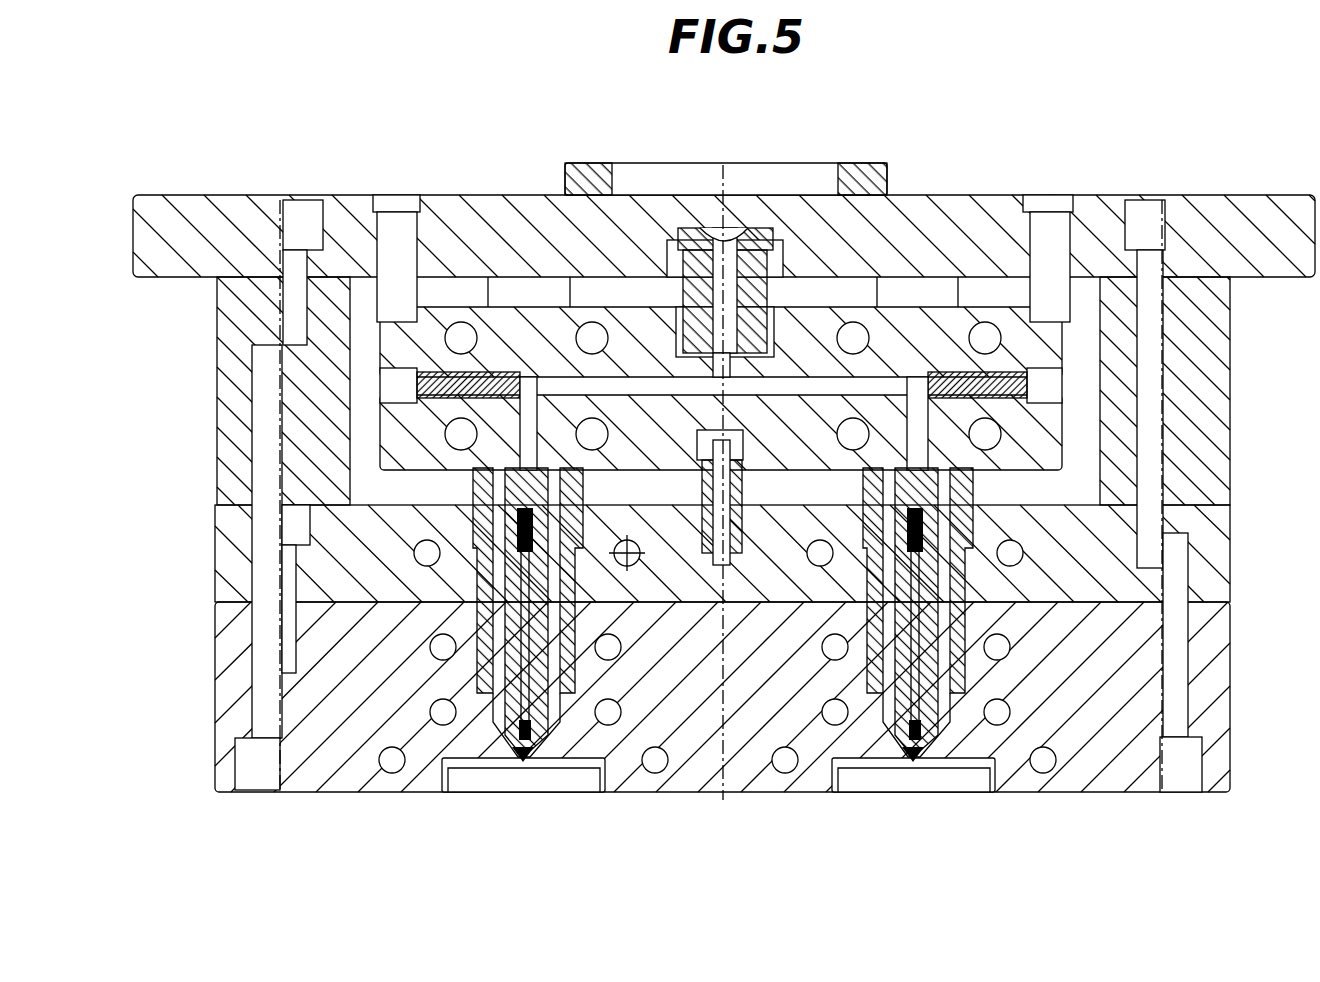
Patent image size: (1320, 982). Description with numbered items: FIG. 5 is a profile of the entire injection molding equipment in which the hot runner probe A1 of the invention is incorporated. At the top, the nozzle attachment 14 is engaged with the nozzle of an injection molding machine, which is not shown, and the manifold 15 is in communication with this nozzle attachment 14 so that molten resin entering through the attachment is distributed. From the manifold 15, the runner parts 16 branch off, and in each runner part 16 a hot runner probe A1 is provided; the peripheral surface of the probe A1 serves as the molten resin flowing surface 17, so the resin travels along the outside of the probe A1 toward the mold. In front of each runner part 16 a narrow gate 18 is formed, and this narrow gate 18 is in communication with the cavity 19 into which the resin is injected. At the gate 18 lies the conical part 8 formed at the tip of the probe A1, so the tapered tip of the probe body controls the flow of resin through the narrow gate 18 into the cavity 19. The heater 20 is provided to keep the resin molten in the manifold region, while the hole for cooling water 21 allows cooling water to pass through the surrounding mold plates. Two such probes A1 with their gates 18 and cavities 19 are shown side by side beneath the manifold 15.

The nozzle attachment 14 is at (717, 237).
The manifold 15 is at (898, 335).
The heater 20 is at (985, 333).
The runner part 16 is at (500, 613).
The hole for cooling water 21 is at (1000, 712).
The molten resin flowing surface 17 is at (503, 660).
The conical part 8 is at (515, 753).
The narrow gate 18 is at (527, 757).
The cavity 19 is at (473, 767).
The hot runner probe A1 is at (540, 735).